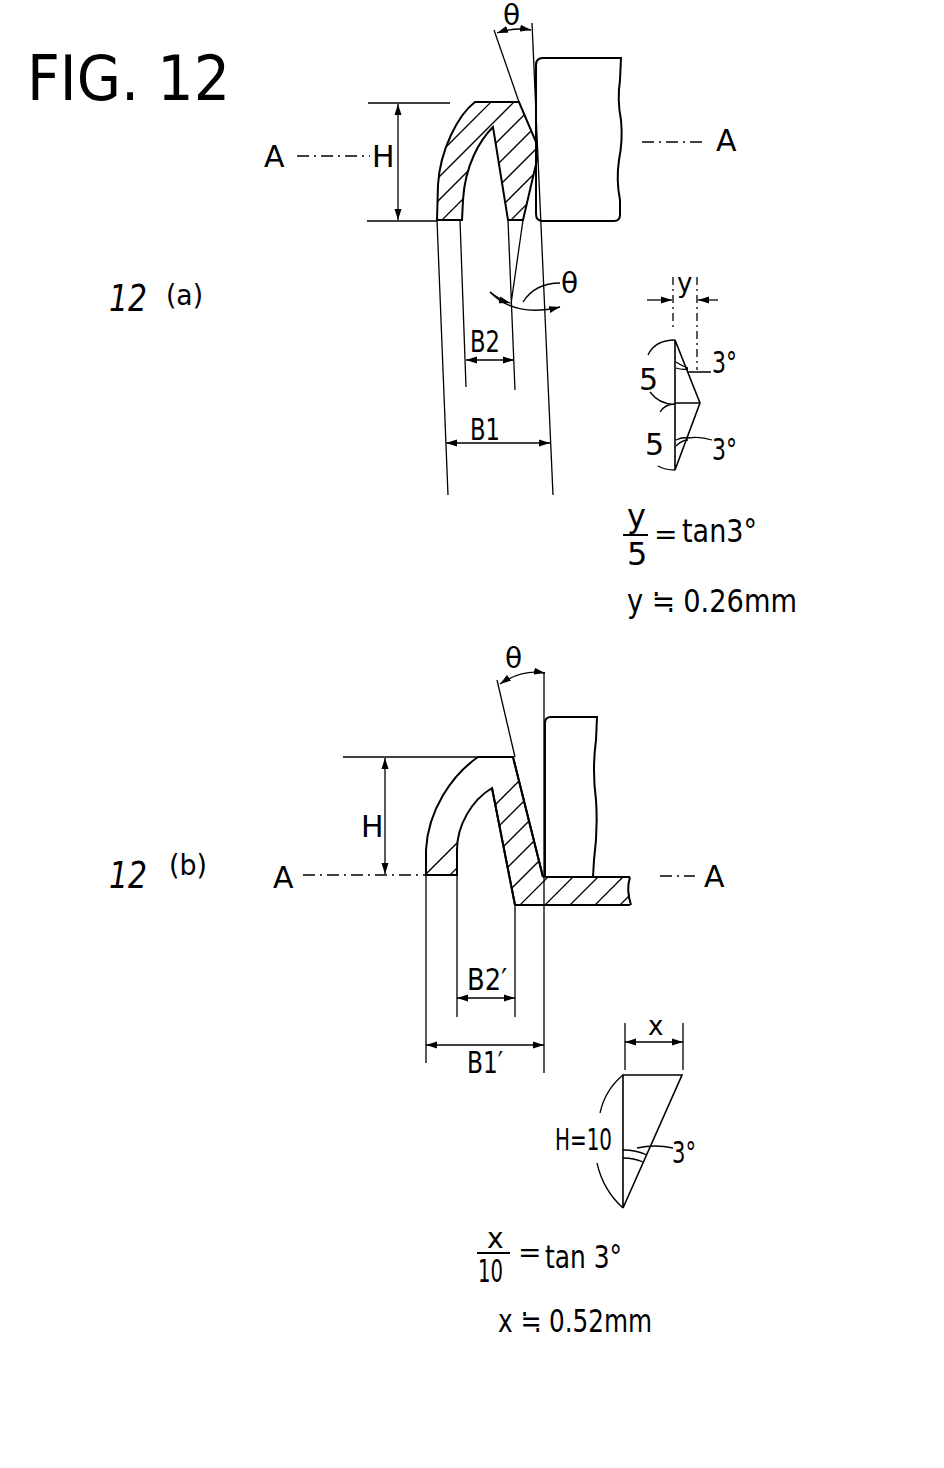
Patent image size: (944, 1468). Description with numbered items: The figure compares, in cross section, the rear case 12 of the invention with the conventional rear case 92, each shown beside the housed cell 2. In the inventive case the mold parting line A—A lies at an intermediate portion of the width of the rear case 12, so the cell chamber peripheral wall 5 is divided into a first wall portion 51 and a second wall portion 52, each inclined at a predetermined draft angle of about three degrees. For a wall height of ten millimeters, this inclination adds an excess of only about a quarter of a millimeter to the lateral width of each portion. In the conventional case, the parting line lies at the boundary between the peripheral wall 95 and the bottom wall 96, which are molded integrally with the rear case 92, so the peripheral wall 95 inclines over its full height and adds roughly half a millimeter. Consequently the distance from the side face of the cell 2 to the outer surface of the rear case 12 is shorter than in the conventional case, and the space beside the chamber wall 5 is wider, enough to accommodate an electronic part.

The rear case 12 is at (463, 127).
The cell 2 is at (600, 207).
The cell chamber peripheral wall 5 is at (665, 63).
The first wall portion 51 is at (520, 133).
The second wall portion 52 is at (527, 181).
The rear case 92 is at (458, 795).
The peripheral wall 95 is at (518, 834).
The bottom wall 96 is at (613, 841).